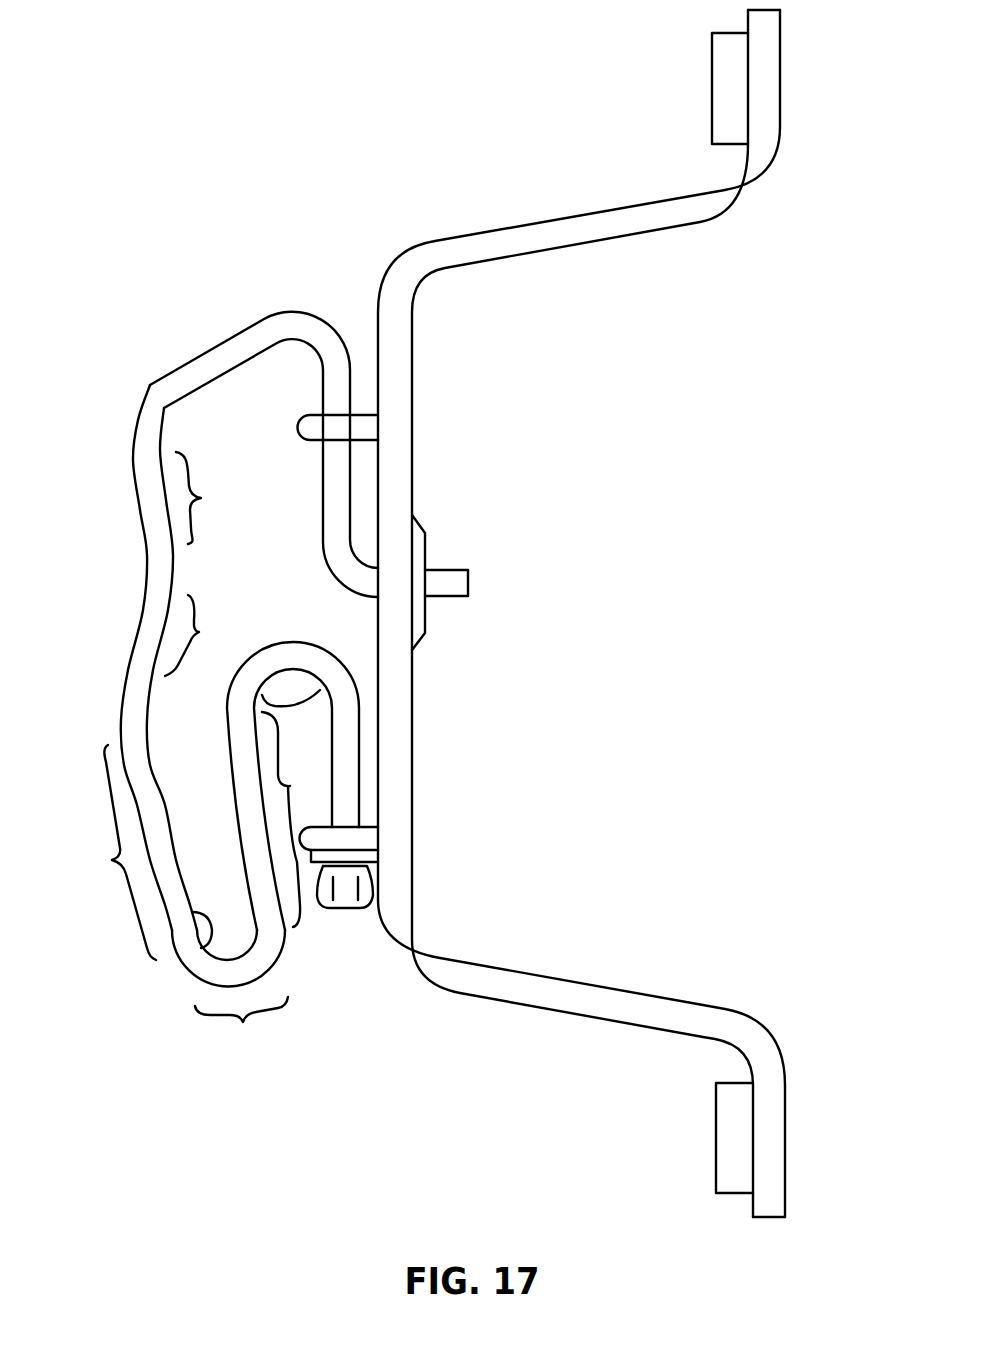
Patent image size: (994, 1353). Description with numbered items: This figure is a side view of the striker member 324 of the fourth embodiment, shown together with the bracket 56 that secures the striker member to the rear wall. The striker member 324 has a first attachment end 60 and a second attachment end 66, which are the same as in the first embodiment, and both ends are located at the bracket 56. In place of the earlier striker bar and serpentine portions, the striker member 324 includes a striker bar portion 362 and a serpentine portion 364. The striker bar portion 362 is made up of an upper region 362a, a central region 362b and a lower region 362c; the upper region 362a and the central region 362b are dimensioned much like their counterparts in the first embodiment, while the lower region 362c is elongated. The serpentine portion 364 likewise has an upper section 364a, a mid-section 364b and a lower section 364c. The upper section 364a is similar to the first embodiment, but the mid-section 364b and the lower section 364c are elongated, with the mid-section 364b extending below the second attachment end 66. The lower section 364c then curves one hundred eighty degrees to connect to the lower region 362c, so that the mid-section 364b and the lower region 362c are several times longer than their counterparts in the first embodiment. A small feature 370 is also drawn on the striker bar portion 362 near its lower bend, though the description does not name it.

The bracket 56 is at (556, 232).
The first attachment end 60 is at (448, 580).
The second attachment end 66 is at (352, 890).
The striker member 324 is at (199, 351).
The striker bar portion 362 is at (152, 628).
The upper region 362a is at (217, 498).
The central region 362b is at (209, 635).
The lower region 362c is at (106, 852).
The serpentine portion 364 is at (297, 656).
The upper section 364a is at (298, 707).
The mid-section 364b is at (290, 786).
The lower section 364c is at (230, 991).
The detent bump 370 is at (207, 921).